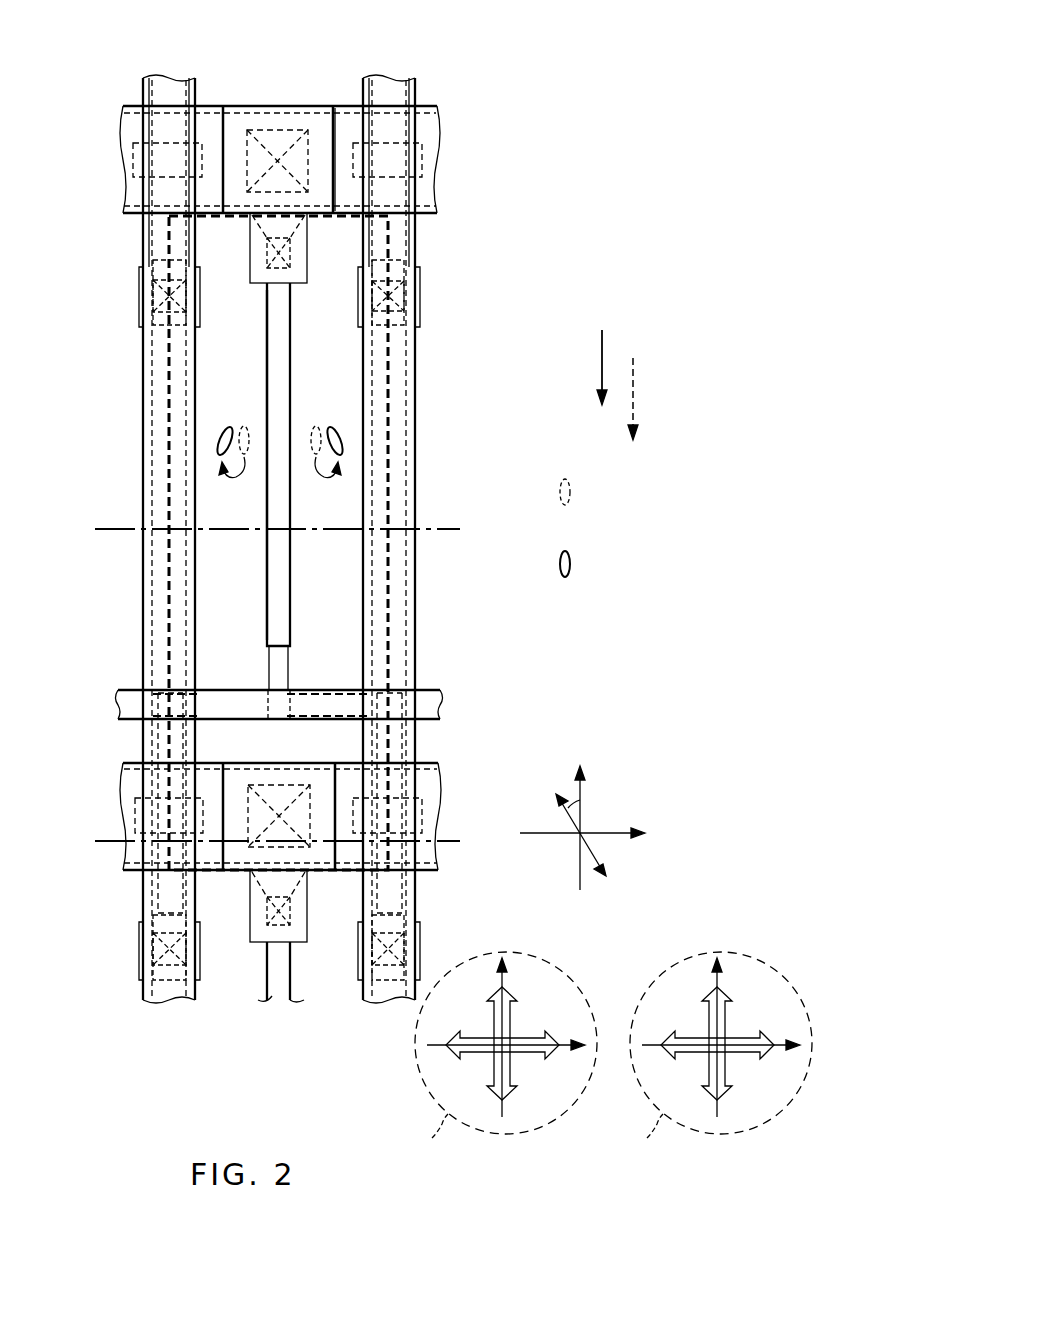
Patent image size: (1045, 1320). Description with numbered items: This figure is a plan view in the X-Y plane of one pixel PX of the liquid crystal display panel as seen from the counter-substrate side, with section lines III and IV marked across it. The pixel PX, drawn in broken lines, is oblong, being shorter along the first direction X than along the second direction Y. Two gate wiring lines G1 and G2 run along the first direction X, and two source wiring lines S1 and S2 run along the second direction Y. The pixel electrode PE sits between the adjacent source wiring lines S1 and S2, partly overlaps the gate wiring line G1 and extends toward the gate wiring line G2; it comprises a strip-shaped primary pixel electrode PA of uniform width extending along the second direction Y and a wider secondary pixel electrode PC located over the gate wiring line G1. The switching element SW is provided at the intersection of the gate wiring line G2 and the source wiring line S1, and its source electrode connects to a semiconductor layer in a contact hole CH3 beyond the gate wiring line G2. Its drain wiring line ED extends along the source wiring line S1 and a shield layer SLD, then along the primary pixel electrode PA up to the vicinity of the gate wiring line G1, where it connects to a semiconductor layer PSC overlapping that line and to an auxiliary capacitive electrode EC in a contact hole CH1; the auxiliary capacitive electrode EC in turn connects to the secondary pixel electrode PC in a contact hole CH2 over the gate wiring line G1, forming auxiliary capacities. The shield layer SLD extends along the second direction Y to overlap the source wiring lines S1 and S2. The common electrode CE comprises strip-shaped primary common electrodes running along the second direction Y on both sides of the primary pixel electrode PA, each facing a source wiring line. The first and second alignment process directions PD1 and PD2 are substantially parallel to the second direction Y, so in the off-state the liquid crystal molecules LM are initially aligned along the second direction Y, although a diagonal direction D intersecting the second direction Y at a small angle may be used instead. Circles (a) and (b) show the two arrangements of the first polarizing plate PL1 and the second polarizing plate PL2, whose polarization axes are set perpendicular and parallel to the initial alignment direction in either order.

The source wiring line S1 is at (179, 88).
The source wiring line S2 is at (384, 88).
The gate wiring line G1 is at (437, 165).
The gate wiring line G2 is at (438, 809).
The semiconductor layer PSC is at (318, 118).
The secondary pixel electrode PC is at (343, 124).
The contact hole CH1 is at (290, 254).
The contact hole CH2 is at (275, 128).
The contact hole CH3 is at (150, 298).
The auxiliary capacitive electrode EC is at (252, 269).
The common electrode CE is at (143, 418).
The pixel electrode PE is at (298, 382).
The primary pixel electrode PA is at (267, 373).
The drain wiring line ED is at (268, 670).
The shield layer SLD is at (330, 705).
The pixel PX is at (404, 424).
The switching element SW is at (108, 775).
The liquid crystal molecule LM is at (498, 512).
The first alignment process direction PD1 is at (602, 338).
The second alignment process direction PD2 is at (633, 370).
The first polarizing plate PL1 is at (512, 1006).
The second polarizing plate PL2 is at (727, 1006).
The diagonal direction D is at (558, 783).
The first direction X is at (658, 834).
The second direction Y is at (658, 814).
The section line III- III is at (279, 533).
The section line IV- IV is at (281, 844).